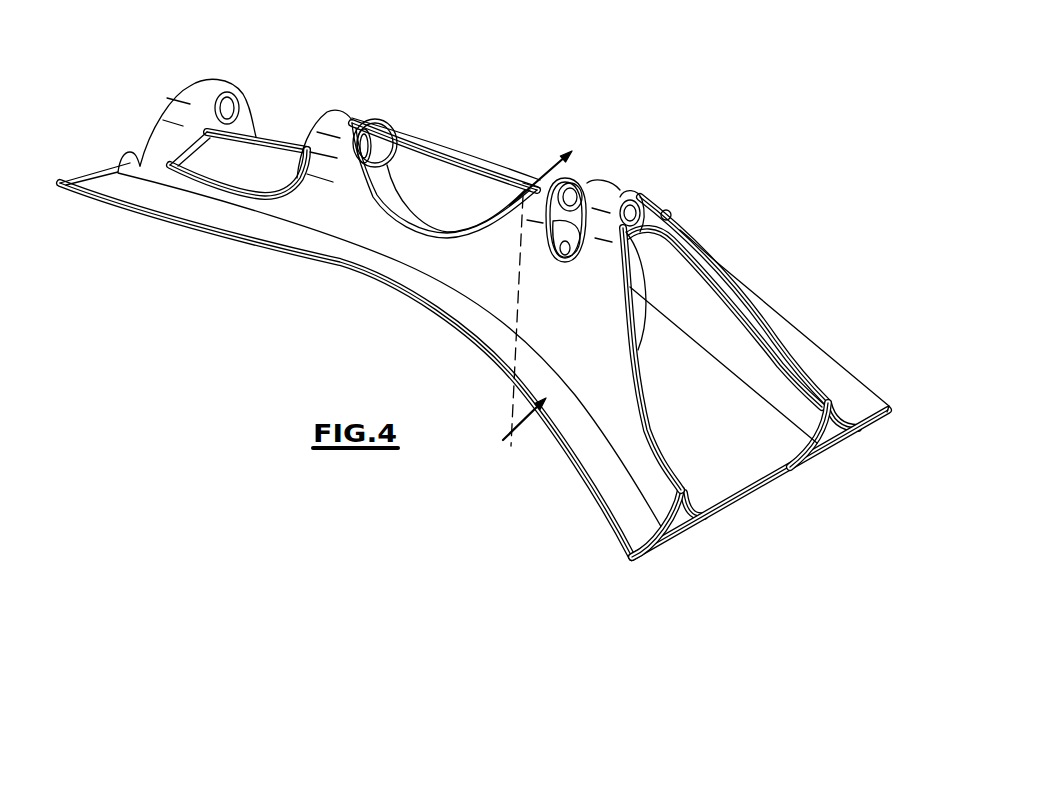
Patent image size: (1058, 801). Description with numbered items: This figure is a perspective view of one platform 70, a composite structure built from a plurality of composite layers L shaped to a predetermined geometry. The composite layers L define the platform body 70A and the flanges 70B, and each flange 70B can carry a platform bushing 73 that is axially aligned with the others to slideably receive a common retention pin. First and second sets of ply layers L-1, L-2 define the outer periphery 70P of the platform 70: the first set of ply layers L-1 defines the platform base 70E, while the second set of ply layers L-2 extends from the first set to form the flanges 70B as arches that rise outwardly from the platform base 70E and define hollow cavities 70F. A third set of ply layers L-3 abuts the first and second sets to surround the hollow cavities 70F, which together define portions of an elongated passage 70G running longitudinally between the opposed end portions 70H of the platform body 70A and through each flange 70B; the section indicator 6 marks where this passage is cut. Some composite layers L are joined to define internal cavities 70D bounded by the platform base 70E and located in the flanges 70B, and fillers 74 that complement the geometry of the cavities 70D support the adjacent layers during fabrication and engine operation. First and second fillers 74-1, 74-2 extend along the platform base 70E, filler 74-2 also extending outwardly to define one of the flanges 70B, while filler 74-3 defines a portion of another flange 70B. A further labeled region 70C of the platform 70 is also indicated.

The platform 70 is at (109, 70).
The platform body 70A is at (148, 208).
The flanges 70B is at (217, 78).
The web 70C is at (421, 230).
The internal cavities 70D is at (255, 130).
The platform base 70E is at (780, 488).
The hollow cavities 70F is at (183, 135).
The elongated passage 70G is at (740, 310).
The opposed end portions 70H is at (128, 150).
The outer periphery 70P is at (580, 448).
The platform bushing 73 is at (247, 100).
The fillers 74 is at (207, 105).
The first filler 74-1 is at (682, 528).
The second filler 74-2 is at (848, 438).
The filler 74-3 is at (632, 337).
The section line 6- 6 is at (524, 214).
The composite layers L is at (652, 560).
The first set of ply layers L-1 is at (688, 530).
The second set of ply layers L-2 is at (620, 540).
The third set of ply layers L-3 is at (740, 515).